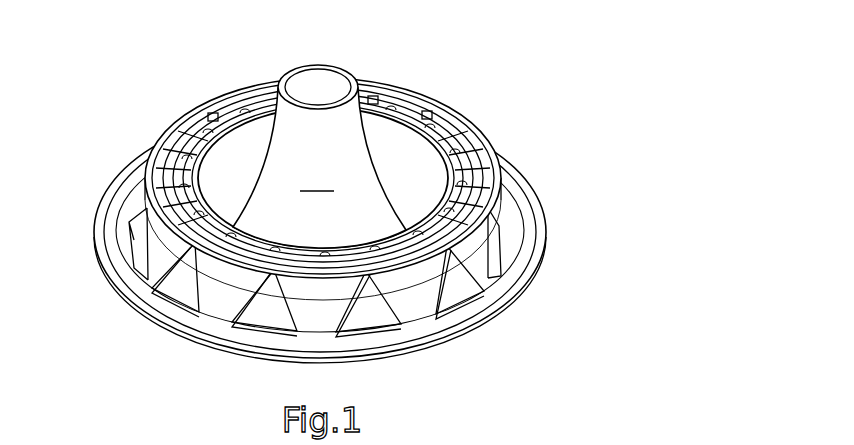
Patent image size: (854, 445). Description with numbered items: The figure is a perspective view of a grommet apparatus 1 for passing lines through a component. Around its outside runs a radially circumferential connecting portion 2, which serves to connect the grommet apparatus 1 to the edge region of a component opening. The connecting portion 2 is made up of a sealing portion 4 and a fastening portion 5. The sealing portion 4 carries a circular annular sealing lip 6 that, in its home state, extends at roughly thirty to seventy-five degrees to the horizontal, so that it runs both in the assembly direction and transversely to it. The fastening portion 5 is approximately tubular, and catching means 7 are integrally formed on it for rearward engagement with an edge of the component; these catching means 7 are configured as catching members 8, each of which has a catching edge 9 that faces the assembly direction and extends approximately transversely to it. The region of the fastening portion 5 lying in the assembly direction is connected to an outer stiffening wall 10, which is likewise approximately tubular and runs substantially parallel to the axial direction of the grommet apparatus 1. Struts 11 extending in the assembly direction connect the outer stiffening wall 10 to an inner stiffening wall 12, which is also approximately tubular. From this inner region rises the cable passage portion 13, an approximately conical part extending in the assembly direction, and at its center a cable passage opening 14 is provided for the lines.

The grommet apparatus 1 is at (388, 224).
The connecting portion 2 is at (524, 185).
The sealing portion 4 is at (523, 217).
The fastening portion 5 is at (457, 282).
The sealing lip 6 is at (137, 311).
The catching means 7 is at (367, 320).
The catching member 8 is at (258, 343).
The catching edge 9 is at (160, 315).
The outer stiffening wall 10 is at (465, 115).
The strut 11 is at (214, 118).
The inner stiffening wall 12 is at (373, 100).
The cable passage portion 13 is at (319, 168).
The cable passage opening 14 is at (326, 71).